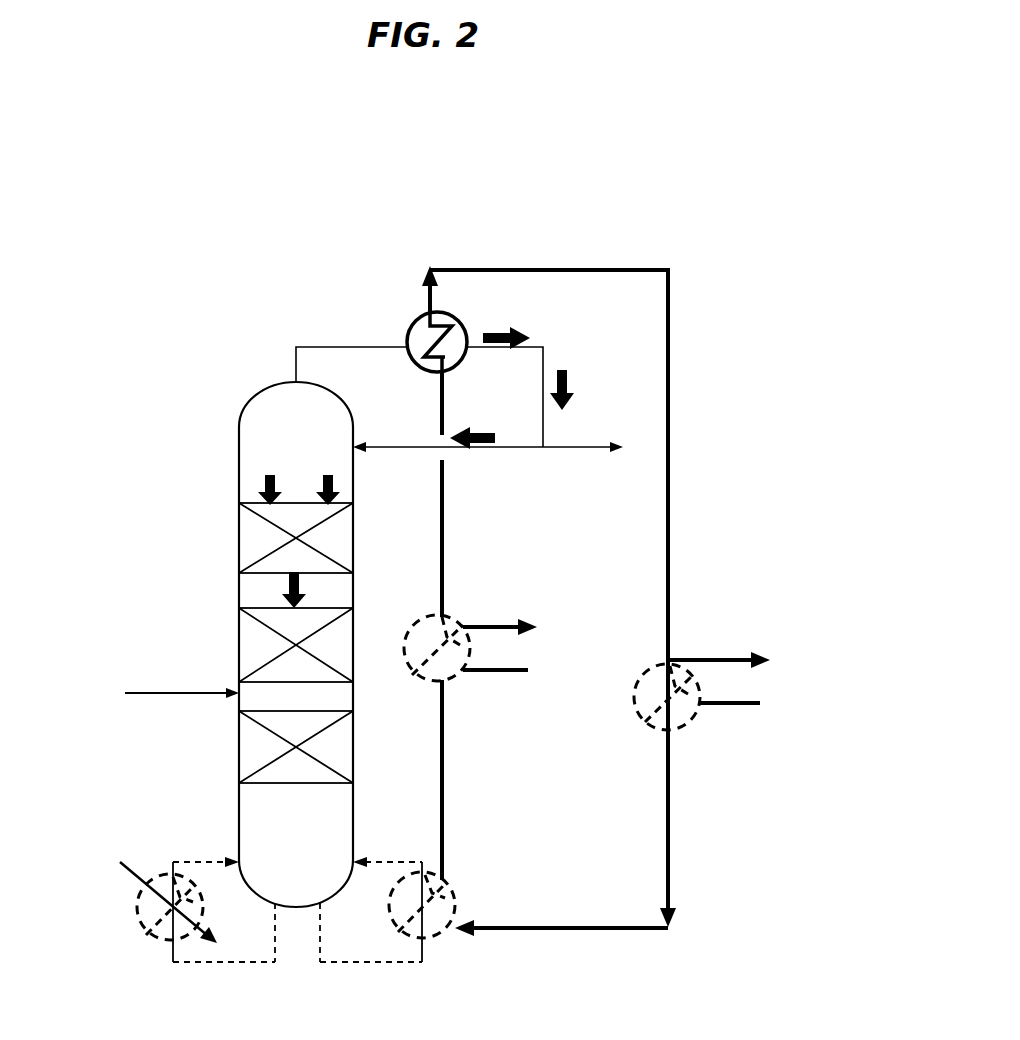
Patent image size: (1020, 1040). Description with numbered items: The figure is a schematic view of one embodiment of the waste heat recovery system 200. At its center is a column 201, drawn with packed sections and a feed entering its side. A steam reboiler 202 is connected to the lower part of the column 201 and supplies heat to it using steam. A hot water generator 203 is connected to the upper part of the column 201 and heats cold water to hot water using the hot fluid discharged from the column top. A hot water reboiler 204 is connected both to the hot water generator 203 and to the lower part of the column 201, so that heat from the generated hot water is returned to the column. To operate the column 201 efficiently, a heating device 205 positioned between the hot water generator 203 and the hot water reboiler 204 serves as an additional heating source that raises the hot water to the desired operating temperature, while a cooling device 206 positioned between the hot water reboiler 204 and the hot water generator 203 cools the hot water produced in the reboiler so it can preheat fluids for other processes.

The waste heat recovery system 200 is at (510, 182).
The column 201 is at (238, 427).
The steam reboiler 202 is at (152, 927).
The hot water generator 203 is at (410, 320).
The hot water reboiler 204 is at (440, 933).
The heating device 205 is at (670, 653).
The cooling device 206 is at (448, 617).